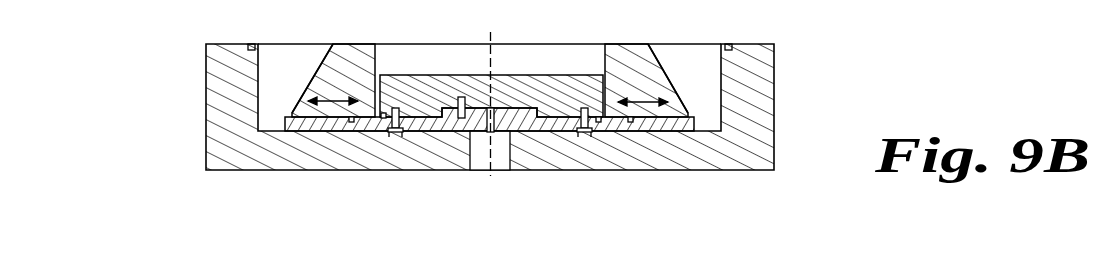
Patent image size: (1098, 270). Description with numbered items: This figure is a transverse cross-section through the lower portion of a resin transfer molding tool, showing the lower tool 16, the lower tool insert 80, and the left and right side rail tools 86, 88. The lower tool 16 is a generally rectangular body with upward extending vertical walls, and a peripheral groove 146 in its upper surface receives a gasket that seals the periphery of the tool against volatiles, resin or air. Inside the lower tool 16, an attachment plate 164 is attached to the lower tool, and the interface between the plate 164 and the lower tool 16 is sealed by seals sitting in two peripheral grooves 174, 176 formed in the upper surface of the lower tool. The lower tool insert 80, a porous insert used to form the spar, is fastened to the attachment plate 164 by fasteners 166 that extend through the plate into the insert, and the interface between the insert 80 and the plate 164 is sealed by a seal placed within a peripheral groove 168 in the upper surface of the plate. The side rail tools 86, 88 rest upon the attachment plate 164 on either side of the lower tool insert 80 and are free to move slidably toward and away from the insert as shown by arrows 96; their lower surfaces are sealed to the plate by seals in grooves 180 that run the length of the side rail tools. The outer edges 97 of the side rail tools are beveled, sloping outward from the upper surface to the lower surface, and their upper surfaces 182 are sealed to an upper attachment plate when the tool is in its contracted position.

The lower tool 16 is at (212, 140).
The lower tool insert 80 is at (543, 86).
The left side rail tool 86 is at (333, 75).
The right side rail tool 88 is at (647, 80).
The arrows 96 is at (312, 88).
The outer edges 97 is at (334, 48).
The peripheral groove 146 is at (250, 43).
The attachment plate 164 is at (690, 122).
The fasteners 166 is at (407, 134).
The peripheral groove 168 is at (386, 122).
The peripheral groove 174 is at (577, 134).
The peripheral groove 176 is at (388, 134).
The grooves 180 is at (383, 116).
The upper surfaces 182 is at (372, 44).